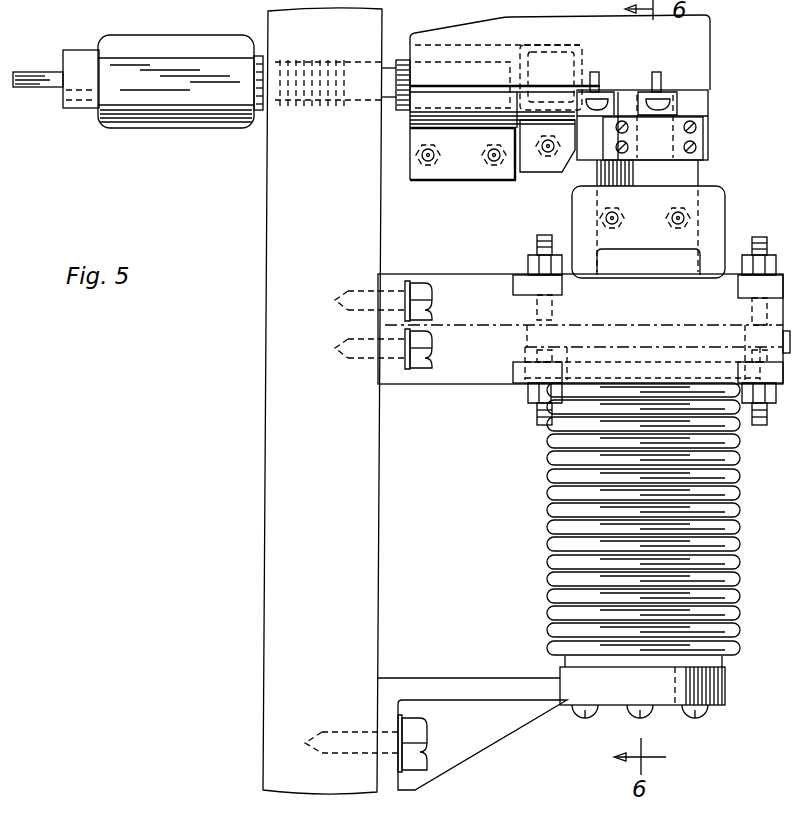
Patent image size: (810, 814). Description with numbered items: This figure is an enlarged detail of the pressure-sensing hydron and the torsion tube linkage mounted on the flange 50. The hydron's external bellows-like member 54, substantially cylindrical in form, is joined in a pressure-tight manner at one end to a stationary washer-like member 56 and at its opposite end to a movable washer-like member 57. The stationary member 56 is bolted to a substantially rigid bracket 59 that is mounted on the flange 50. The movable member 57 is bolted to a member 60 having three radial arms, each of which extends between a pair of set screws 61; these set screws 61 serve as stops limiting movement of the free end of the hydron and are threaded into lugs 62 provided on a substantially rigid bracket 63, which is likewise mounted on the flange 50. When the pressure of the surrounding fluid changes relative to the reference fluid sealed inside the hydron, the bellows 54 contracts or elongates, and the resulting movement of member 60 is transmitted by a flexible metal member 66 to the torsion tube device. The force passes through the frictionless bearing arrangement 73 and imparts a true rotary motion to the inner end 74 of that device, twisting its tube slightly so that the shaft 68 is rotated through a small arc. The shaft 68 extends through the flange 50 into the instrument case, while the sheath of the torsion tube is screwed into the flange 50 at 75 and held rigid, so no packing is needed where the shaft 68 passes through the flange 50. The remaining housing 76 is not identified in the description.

The flange 50 is at (365, 548).
The external bellows-like member 54 is at (742, 546).
The stationary washer-like member 56 is at (725, 672).
The movable washer-like member 57 is at (630, 360).
The bracket 59 is at (456, 678).
The member 60 is at (712, 239).
The set screws 61 is at (537, 309).
The lugs 62 is at (526, 279).
The bracket 63 is at (463, 372).
The flexible metal member 66 is at (683, 175).
The shaft 68 is at (50, 90).
The frictionless bearing arrangement 73 is at (712, 93).
The inner end of the torsion tube device 74 is at (562, 66).
The threaded attachment of sheath to flange 75 is at (290, 56).
The housing 76 is at (433, 62).